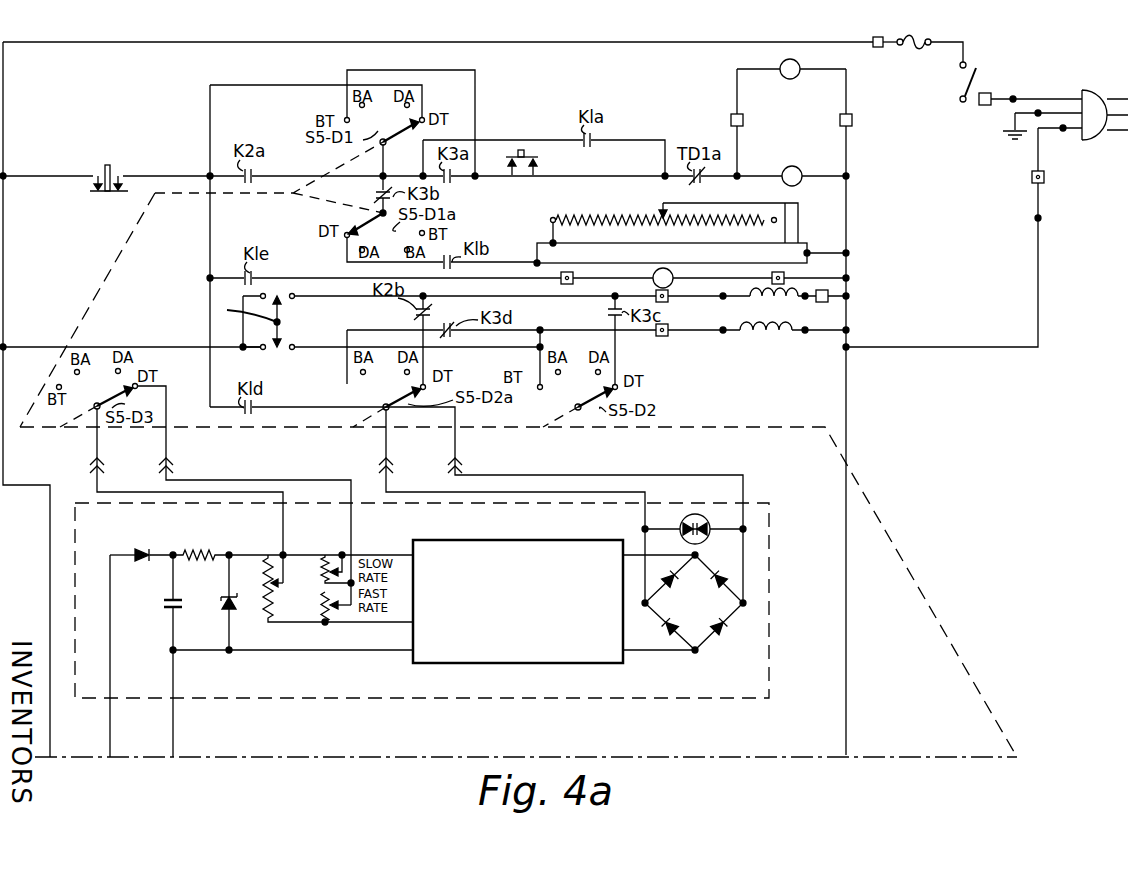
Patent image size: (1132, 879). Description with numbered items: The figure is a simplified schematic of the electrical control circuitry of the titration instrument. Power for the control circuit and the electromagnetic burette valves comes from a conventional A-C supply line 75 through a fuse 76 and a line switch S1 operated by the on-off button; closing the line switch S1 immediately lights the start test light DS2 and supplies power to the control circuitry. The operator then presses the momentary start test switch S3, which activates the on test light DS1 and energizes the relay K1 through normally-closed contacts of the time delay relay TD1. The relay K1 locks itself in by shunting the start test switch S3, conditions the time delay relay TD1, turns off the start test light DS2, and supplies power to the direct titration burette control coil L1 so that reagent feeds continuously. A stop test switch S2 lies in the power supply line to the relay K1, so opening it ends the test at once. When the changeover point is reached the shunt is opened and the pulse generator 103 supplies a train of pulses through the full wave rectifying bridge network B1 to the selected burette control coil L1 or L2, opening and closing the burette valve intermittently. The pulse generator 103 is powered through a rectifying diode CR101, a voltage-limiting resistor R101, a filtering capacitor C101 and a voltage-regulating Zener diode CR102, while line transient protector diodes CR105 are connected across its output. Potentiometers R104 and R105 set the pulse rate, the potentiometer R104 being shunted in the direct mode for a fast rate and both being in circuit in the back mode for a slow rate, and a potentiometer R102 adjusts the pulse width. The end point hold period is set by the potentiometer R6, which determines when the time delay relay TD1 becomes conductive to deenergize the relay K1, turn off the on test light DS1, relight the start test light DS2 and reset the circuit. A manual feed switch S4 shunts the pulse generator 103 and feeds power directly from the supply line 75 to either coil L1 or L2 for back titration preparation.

The A-C supply line 75 is at (1061, 88).
The fuse 76 is at (920, 38).
The pulse generator 103 is at (534, 665).
The line switch S1 is at (975, 82).
The stop test switch S2 is at (97, 194).
The start test switch S3 is at (528, 155).
The manual feed switch S4 is at (284, 322).
The relay K1 is at (810, 152).
The on test light DS1 is at (796, 65).
The start test light DS2 is at (673, 283).
The time delay relay TD1 is at (672, 253).
The potentiometer R6 is at (636, 207).
The direct titration burette control coil L1 is at (800, 308).
The back titration burette control coil L2 is at (800, 342).
The full wave rectifying bridge network B1 is at (702, 615).
The line transient protector diodes CR105 is at (703, 510).
The rectifying diode CR101 is at (140, 552).
The voltage-regulating Zener diode CR102 is at (226, 612).
The filtering capacitor C101 is at (167, 607).
The voltage-limiting resistor R101 is at (190, 550).
The potentiometer R102 is at (263, 560).
The potentiometer R104 is at (320, 558).
The potentiometer R105 is at (322, 620).